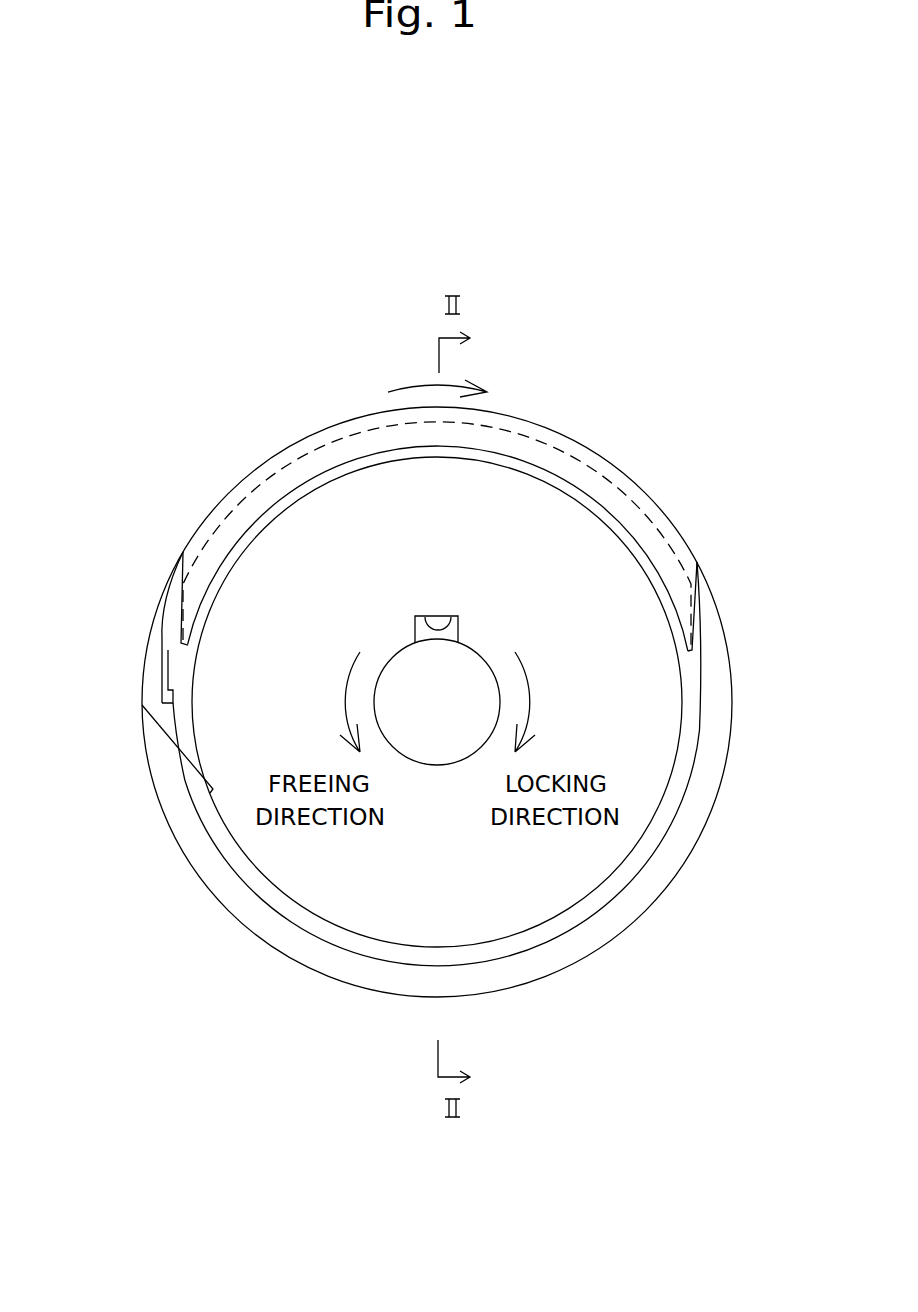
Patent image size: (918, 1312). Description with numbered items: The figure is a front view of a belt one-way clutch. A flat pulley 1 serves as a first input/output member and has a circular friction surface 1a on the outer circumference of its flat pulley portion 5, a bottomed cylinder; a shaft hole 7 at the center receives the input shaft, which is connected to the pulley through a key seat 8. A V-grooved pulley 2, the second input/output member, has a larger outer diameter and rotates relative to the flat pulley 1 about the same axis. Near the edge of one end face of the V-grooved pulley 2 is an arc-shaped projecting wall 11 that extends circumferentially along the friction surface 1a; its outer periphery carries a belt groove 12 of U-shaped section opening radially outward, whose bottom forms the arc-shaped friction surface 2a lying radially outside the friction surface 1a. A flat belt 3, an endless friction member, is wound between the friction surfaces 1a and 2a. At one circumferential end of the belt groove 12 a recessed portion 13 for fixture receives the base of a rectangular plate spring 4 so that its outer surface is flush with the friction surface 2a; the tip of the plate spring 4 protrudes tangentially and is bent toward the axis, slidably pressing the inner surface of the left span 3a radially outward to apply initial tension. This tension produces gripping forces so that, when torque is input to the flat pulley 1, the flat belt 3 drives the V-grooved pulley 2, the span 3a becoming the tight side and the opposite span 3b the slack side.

The flat pulley 1 is at (615, 902).
The circular friction surface 1a is at (650, 827).
The V-grooved pulley 2 is at (338, 401).
The arc-shaped friction surface 2a is at (258, 488).
The flat belt 3 is at (243, 910).
The span 3a is at (152, 727).
The span 3b is at (707, 680).
The rectangular plate spring 4 is at (160, 717).
The flat pulley portion 5 is at (660, 743).
The shaft hole 7 is at (431, 715).
The key seat 8 is at (446, 617).
The projecting wall 11 is at (618, 470).
The belt groove 12 is at (670, 505).
The recessed portion for fixture 13 is at (217, 537).